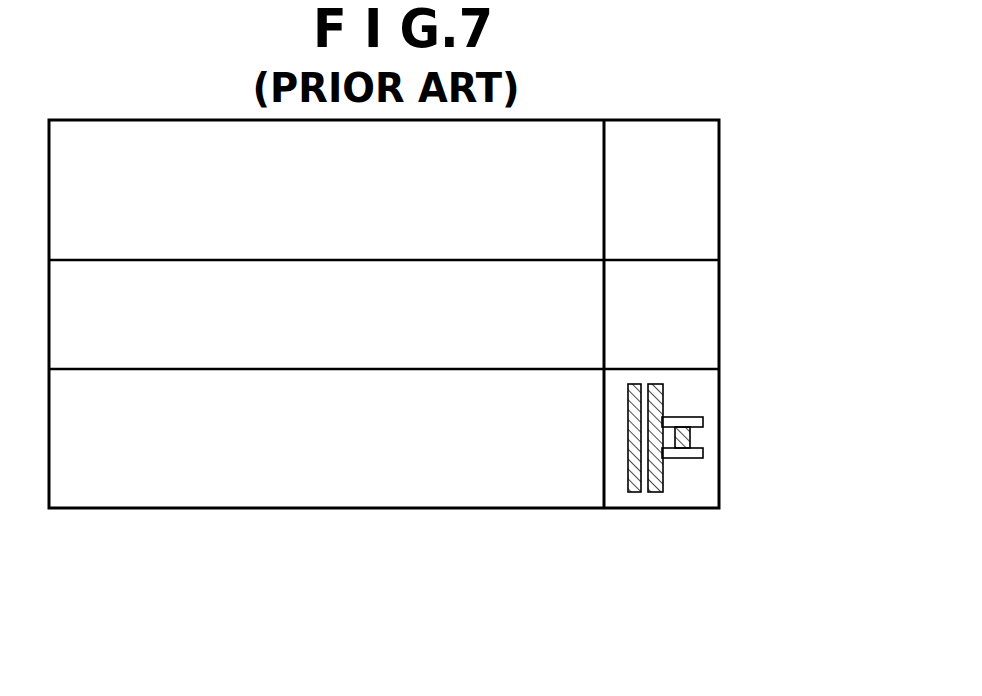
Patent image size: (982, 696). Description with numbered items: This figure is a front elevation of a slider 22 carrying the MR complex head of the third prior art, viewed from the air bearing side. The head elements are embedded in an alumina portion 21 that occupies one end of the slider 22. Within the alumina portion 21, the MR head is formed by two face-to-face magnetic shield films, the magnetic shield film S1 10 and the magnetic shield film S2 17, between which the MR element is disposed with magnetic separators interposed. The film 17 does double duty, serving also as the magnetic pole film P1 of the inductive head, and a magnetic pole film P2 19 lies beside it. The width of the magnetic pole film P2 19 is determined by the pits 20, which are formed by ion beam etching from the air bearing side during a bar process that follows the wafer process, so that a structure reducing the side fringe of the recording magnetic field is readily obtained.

The slider 22 is at (332, 480).
The alumina portion 21 is at (692, 213).
The magnetic shield film S1 10 is at (630, 493).
The magnetic shield film S2 / magnetic pole film P1 17 is at (662, 495).
The pits 20 is at (700, 418).
The magnetic pole film P2 19 is at (690, 440).